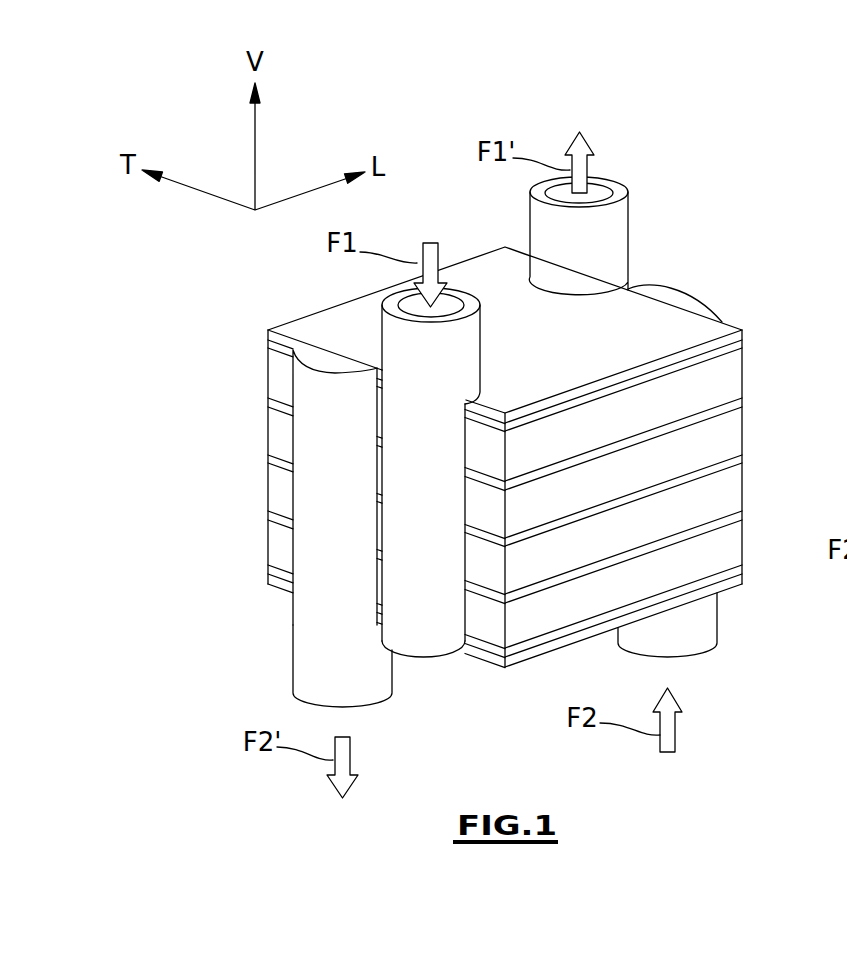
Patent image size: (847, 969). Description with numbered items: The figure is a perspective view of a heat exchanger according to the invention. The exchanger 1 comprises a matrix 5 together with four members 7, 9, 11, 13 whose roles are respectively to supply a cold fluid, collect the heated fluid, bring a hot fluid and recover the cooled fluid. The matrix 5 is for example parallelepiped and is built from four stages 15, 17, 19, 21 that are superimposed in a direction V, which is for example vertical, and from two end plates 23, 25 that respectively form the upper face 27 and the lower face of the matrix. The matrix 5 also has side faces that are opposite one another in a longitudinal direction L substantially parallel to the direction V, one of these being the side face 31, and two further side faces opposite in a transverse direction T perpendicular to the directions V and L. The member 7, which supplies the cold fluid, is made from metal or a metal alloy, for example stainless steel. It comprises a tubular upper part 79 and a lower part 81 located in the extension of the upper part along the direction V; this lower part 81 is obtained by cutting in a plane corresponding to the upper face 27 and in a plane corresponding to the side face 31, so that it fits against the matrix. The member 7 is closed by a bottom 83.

The exchanger 1 is at (724, 123).
The matrix 5 is at (248, 457).
The member 7 is at (463, 353).
The member 9 is at (615, 225).
The member 11 is at (703, 634).
The member 13 is at (357, 698).
The stage 15 is at (752, 377).
The stage 17 is at (752, 430).
The stage 19 is at (752, 490).
The stage 21 is at (752, 548).
The end plate 23 is at (715, 318).
The end plate 25 is at (732, 583).
The upper face 27 is at (503, 283).
The side face 31 is at (282, 555).
The tubular upper part 79 is at (397, 348).
The lower part 81 is at (432, 592).
The bottom 83 is at (440, 665).